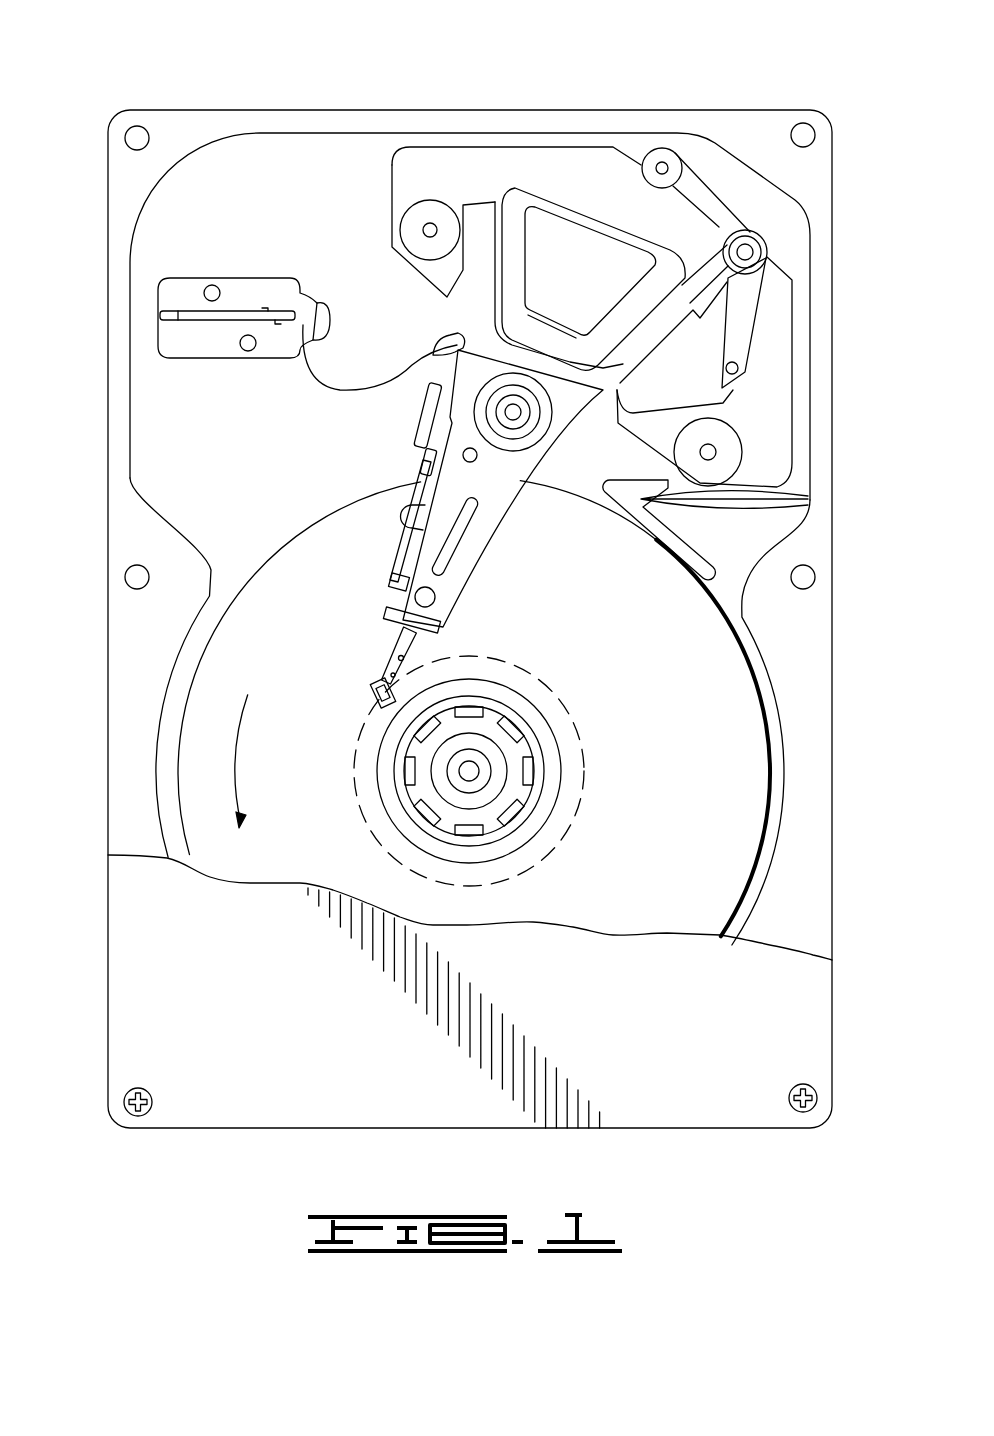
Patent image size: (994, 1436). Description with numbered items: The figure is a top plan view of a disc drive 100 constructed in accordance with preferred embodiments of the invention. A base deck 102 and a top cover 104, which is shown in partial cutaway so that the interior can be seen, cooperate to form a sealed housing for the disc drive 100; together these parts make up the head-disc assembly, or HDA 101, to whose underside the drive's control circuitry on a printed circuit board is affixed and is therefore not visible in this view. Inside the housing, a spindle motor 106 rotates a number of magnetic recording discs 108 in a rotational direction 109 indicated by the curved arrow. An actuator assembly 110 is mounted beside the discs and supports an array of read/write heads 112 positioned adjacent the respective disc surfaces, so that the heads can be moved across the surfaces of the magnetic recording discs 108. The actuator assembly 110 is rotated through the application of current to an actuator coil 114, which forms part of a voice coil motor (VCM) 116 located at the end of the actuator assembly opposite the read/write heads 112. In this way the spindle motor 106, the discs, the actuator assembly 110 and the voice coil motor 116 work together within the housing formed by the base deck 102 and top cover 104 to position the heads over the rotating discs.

The disc drive 100 is at (215, 72).
The HDA 101 is at (141, 181).
The base deck 102 is at (160, 440).
The top cover 104 is at (162, 933).
The spindle motor 106 is at (503, 761).
The magnetic recording discs 108 is at (745, 783).
The rotational direction 109 is at (235, 755).
The actuator assembly 110 is at (476, 493).
The read/write heads 112 is at (376, 687).
The actuator coil 114 is at (542, 188).
The voice coil motor (VCM) 116 is at (600, 165).